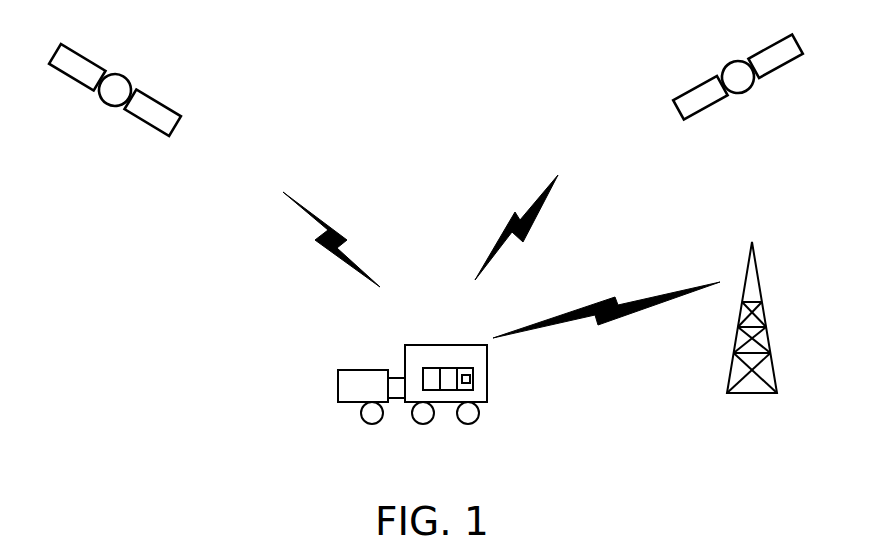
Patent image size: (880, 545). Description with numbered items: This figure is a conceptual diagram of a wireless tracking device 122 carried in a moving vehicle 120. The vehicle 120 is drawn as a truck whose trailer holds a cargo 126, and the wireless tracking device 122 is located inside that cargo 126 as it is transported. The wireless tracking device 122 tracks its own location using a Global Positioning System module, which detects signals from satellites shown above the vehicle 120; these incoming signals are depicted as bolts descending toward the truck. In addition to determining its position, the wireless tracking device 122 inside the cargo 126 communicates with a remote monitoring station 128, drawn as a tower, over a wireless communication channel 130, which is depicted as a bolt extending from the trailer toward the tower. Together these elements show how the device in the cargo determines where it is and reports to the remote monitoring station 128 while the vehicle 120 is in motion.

The vehicle 120 is at (401, 383).
The wireless tracking device 122 is at (470, 379).
The cargo 126 is at (473, 365).
The remote monitoring station 128 is at (733, 363).
The wireless communication channel 130 is at (645, 300).